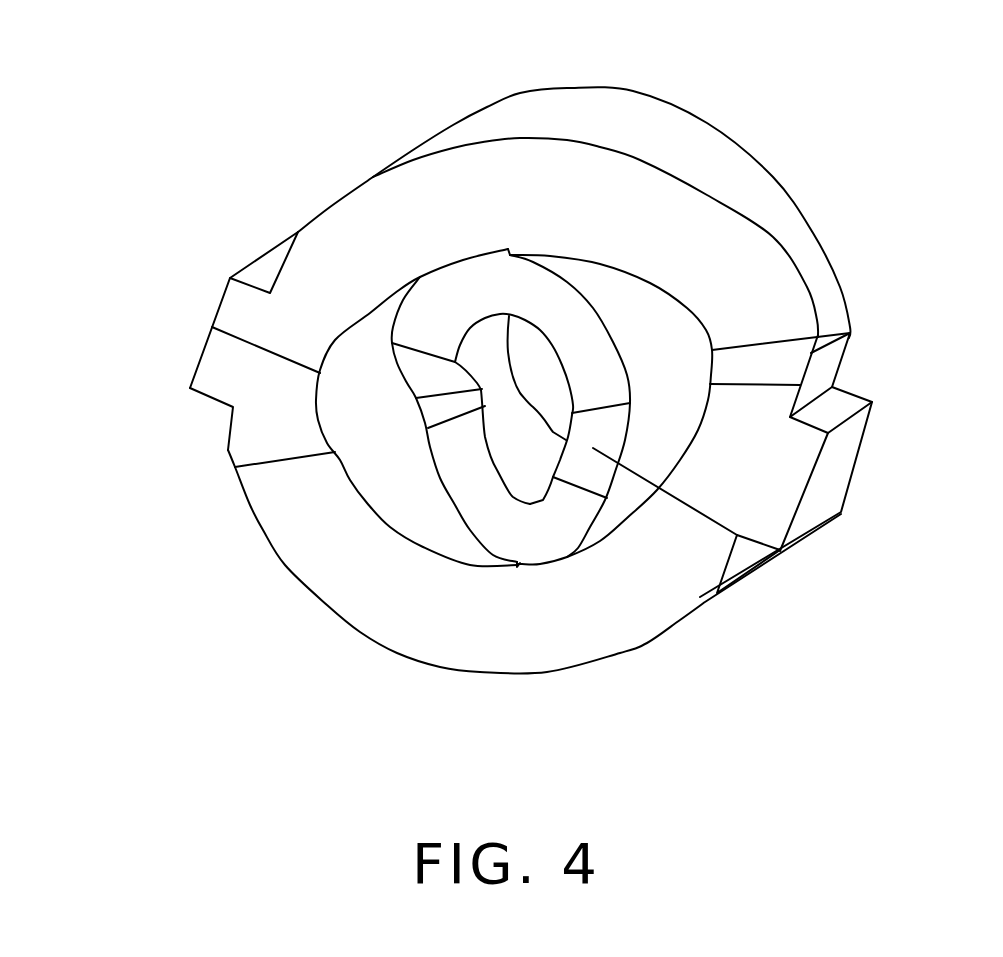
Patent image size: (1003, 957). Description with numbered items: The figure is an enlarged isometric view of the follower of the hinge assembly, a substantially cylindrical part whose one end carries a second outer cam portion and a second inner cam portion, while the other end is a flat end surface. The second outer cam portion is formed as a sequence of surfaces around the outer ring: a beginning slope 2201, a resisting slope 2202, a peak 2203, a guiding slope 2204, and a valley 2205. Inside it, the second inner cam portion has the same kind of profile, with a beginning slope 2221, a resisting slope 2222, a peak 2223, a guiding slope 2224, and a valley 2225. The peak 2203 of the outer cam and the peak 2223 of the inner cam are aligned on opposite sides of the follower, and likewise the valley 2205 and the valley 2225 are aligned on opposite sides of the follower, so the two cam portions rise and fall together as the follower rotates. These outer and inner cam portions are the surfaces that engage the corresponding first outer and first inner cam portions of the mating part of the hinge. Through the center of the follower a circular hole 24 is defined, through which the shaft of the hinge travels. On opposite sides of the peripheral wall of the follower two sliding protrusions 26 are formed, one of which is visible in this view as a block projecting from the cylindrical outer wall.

The beginning slope 2201 is at (290, 500).
The resisting slope 2202 is at (258, 427).
The peak 2203 is at (258, 344).
The guiding slope 2204 is at (467, 185).
The valley 2205 is at (793, 363).
The beginning slope 2221 is at (575, 322).
The resisting slope 2222 is at (737, 535).
The peak 2223 is at (578, 488).
The guiding slope 2224 is at (521, 537).
The valley 2225 is at (433, 407).
The circular hole 24 is at (537, 385).
The sliding protrusions 26 is at (837, 463).